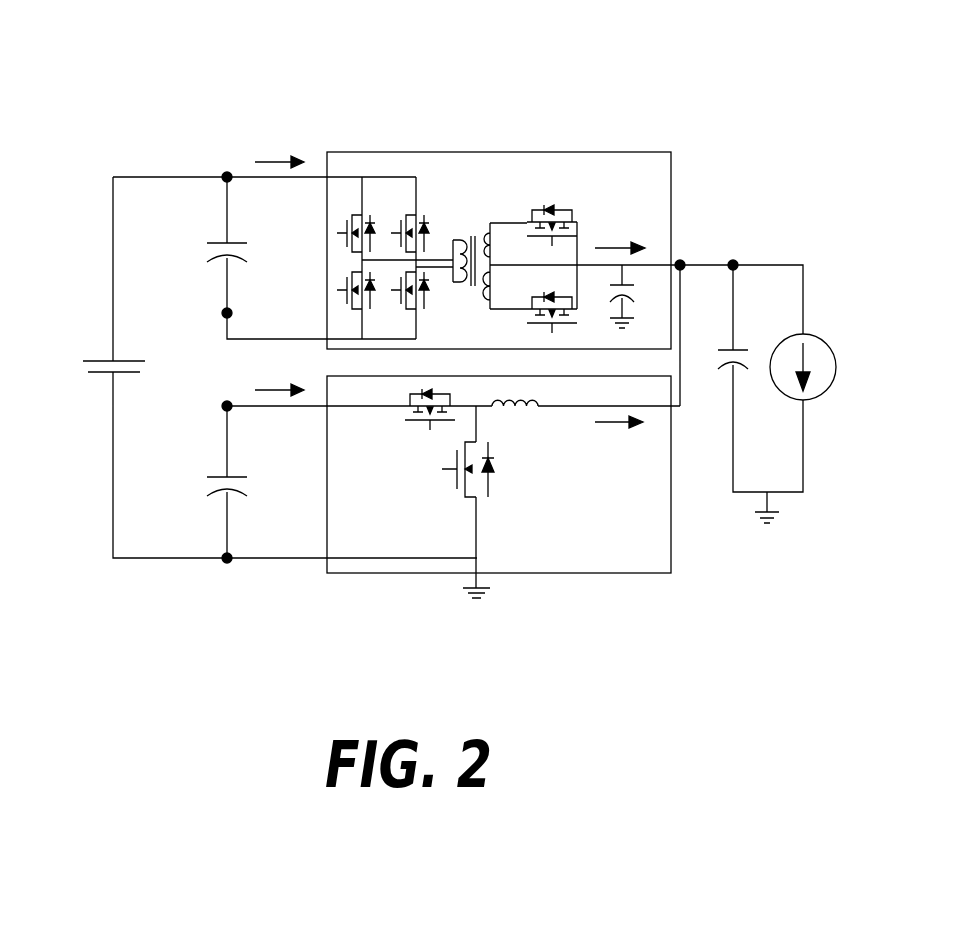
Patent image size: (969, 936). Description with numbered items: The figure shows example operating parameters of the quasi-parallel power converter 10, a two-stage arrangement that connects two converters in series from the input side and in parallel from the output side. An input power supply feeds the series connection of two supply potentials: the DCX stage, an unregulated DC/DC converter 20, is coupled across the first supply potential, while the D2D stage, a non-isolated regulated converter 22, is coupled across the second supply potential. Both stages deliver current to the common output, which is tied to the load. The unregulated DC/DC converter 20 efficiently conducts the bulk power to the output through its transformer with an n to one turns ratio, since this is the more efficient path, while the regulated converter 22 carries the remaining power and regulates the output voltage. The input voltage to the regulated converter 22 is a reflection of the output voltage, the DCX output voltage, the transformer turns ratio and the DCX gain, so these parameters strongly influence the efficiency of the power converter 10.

The quasi-parallel power converter 10 is at (138, 74).
The unregulated DC/DC converter 20 is at (415, 160).
The non-isolated regulated converter 22 is at (415, 566).